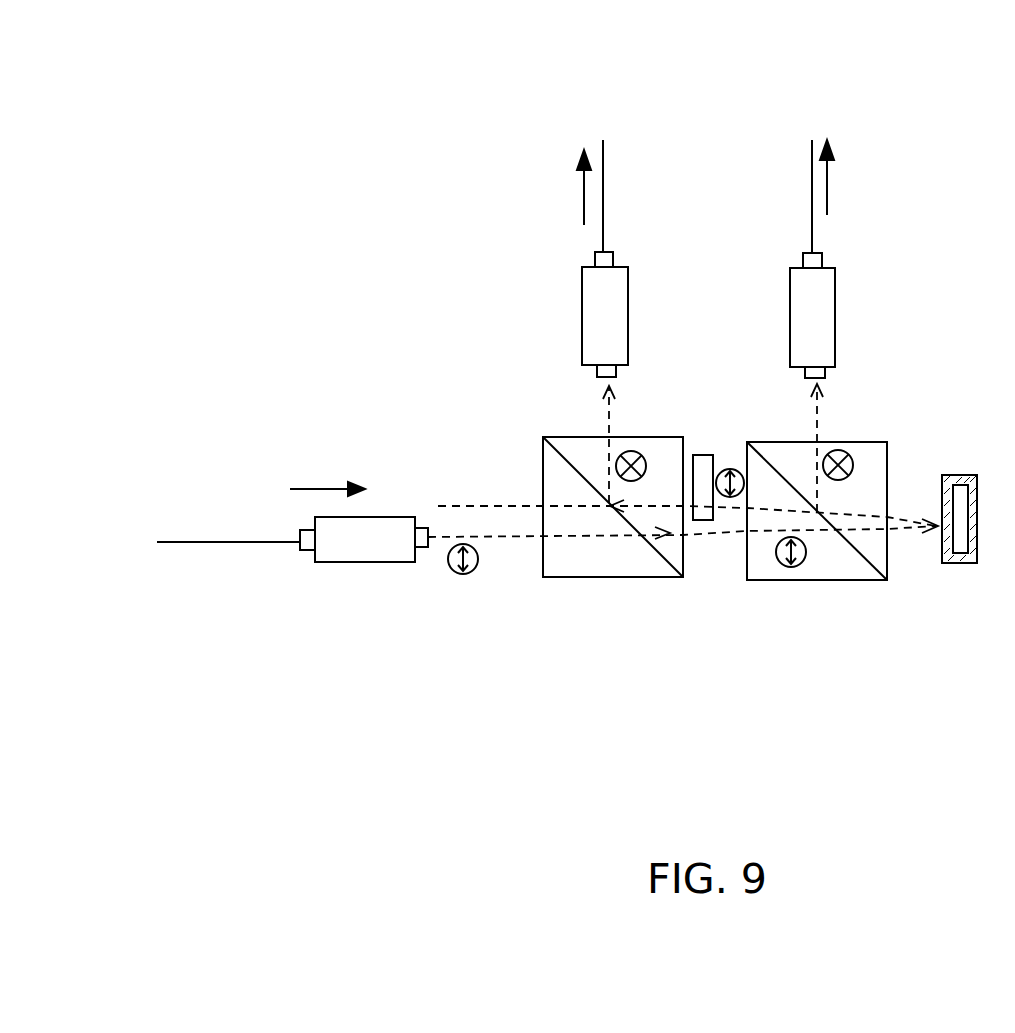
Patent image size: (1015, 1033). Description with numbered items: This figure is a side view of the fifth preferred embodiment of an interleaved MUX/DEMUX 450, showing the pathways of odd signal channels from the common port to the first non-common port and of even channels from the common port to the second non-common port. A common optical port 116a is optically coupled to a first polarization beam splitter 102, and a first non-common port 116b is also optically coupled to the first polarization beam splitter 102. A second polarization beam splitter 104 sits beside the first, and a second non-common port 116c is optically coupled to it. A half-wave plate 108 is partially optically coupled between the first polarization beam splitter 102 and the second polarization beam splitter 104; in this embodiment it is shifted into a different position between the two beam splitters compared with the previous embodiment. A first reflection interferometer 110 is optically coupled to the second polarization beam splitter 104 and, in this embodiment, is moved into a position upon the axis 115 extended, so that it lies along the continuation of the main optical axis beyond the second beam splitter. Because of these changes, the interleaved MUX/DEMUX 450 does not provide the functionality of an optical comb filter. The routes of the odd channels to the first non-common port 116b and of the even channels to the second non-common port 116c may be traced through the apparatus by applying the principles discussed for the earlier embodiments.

The interleaved MUX/DEMUX 450 is at (532, 45).
The first polarization beam splitter 102 is at (540, 558).
The second polarization beam splitter 104 is at (887, 565).
The half-wave plate 108 is at (706, 453).
The first reflection interferometer 110 is at (971, 475).
The axis 115 is at (478, 505).
The common optical port 116a is at (427, 575).
The first non-common port 116b is at (573, 250).
The second non-common port 116c is at (850, 245).